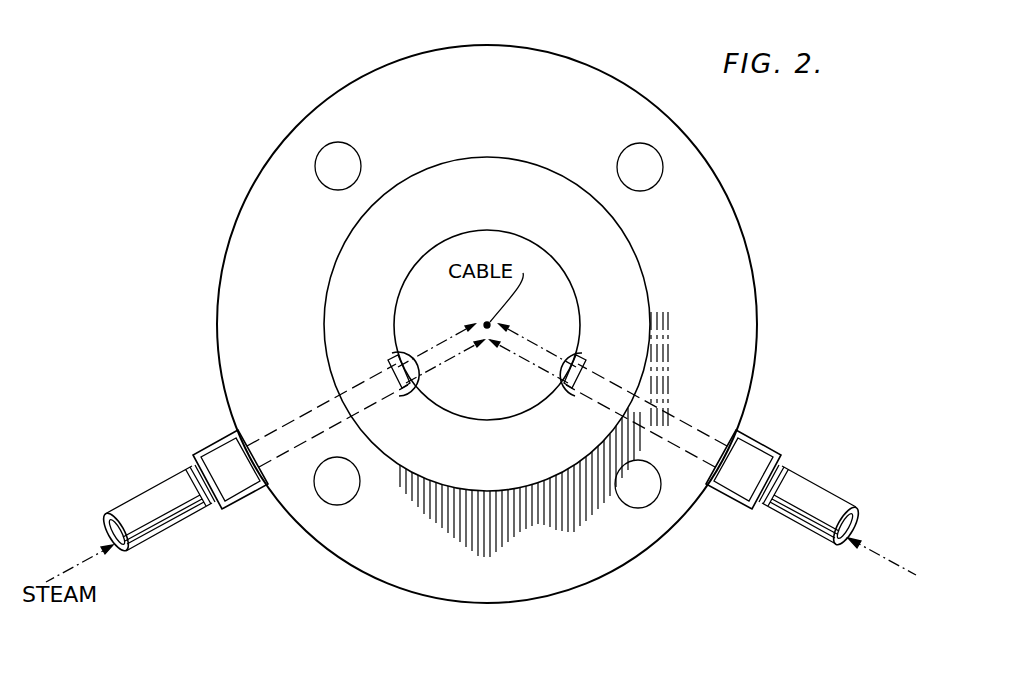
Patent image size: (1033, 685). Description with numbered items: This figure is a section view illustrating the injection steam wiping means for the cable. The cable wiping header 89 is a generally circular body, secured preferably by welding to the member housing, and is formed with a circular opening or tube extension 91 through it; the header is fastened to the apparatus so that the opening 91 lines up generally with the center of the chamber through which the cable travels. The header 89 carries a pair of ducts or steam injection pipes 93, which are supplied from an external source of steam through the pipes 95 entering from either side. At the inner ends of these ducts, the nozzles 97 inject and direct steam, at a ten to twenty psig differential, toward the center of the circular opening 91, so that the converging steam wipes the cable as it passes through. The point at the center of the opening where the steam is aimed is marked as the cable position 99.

The cable wiping header 89 is at (586, 56).
The circular opening 91 is at (558, 297).
The steam injection pipe 93 is at (662, 428).
The pipe 95 is at (807, 503).
The nozzle 97 is at (413, 382).
The cable center point 99 is at (486, 318).